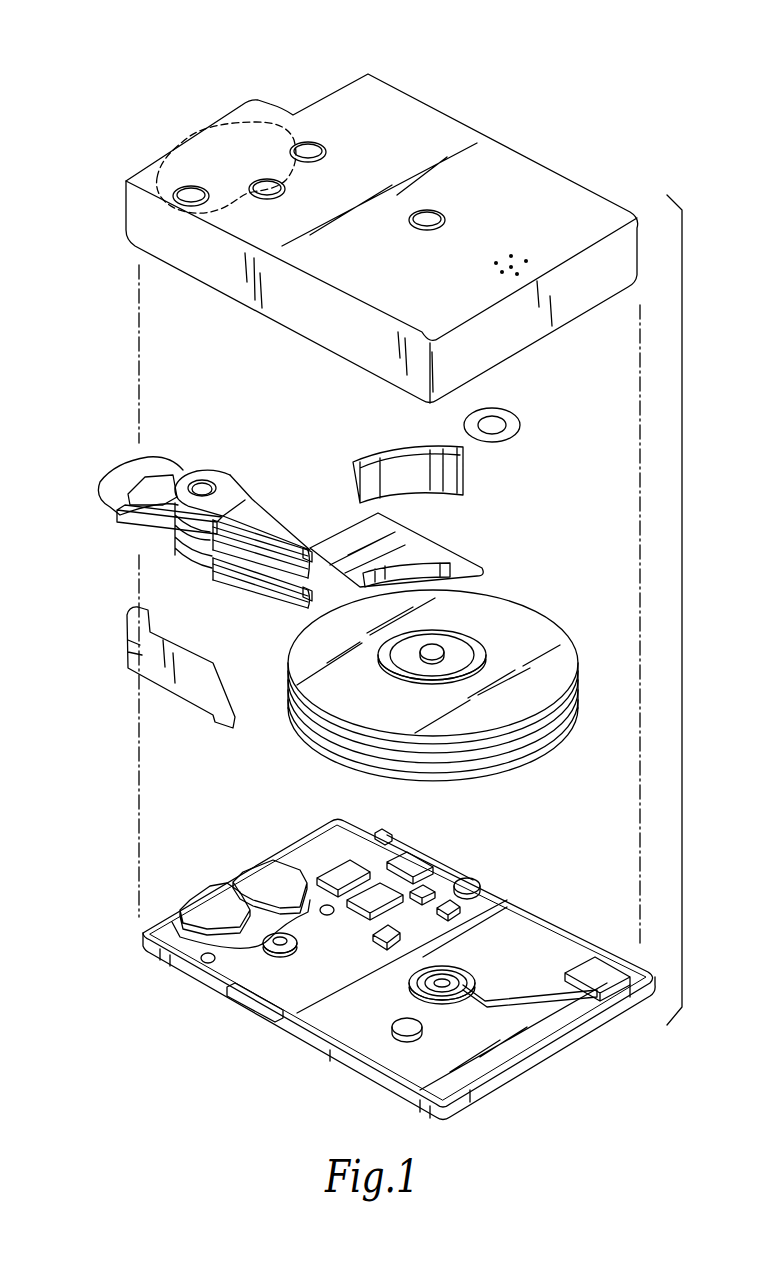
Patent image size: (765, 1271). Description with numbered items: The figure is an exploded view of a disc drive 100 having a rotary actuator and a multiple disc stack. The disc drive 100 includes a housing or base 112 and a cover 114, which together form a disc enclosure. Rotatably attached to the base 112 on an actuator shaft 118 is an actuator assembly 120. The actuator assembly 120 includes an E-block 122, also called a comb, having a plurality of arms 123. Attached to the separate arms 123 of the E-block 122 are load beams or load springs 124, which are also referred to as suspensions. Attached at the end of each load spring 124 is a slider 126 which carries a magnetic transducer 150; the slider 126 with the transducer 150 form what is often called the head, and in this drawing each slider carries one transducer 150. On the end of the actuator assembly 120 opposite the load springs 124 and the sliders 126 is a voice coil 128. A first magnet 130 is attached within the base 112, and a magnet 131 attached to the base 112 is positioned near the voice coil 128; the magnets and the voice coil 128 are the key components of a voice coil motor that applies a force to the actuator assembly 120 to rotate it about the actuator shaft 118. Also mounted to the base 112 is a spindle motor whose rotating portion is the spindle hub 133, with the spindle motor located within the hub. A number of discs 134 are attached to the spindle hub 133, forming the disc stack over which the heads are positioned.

The disc drive 100 is at (508, 47).
The base 112 is at (552, 942).
The cover 114 is at (531, 181).
The actuator shaft 118 is at (207, 482).
The actuator assembly 120 is at (157, 530).
The E-block 122 is at (227, 577).
The arms 123 is at (257, 495).
The load spring 124 is at (267, 523).
The slider 126 is at (307, 553).
The voice coil 128 is at (117, 485).
The first magnet 130 is at (222, 130).
The magnet 131 is at (200, 903).
The spindle hub 133 is at (440, 650).
The discs 134 is at (547, 633).
The magnetic transducer 150 is at (327, 553).